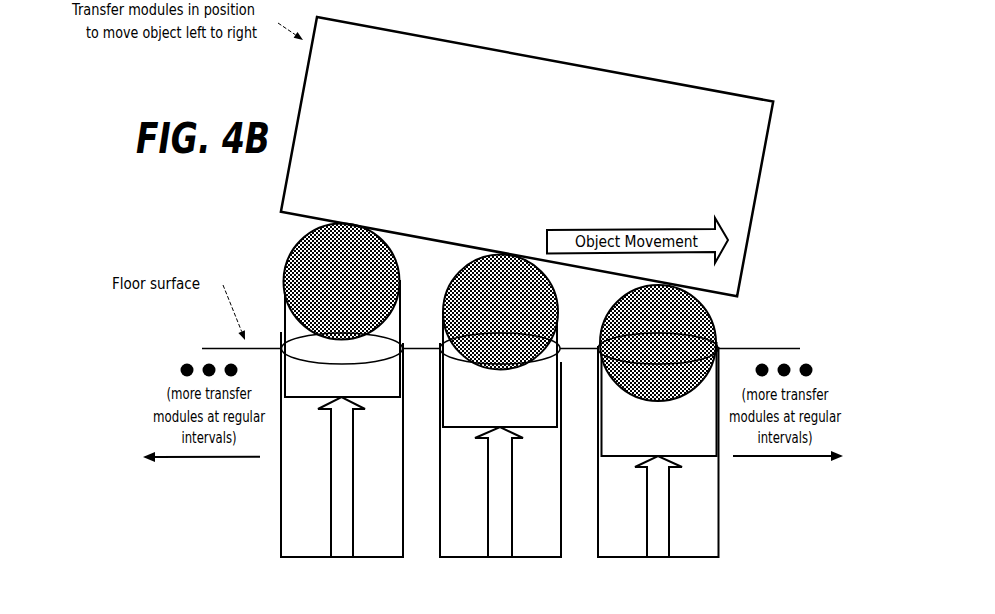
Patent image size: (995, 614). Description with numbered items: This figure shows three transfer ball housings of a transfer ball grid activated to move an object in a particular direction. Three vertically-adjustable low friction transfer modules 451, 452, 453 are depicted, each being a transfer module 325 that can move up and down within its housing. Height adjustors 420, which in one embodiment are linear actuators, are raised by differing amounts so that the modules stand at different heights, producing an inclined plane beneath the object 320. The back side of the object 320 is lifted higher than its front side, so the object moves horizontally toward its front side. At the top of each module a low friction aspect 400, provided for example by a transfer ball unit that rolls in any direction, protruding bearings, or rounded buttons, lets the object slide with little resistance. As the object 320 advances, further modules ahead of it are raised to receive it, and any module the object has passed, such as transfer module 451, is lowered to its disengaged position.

The object 320 is at (537, 193).
The transfer module 325 is at (505, 429).
The low friction aspect 400 is at (355, 263).
The height adjustor 420 is at (347, 540).
The transfer module 451 is at (294, 419).
The transfer module 452 is at (459, 449).
The transfer module 453 is at (710, 451).